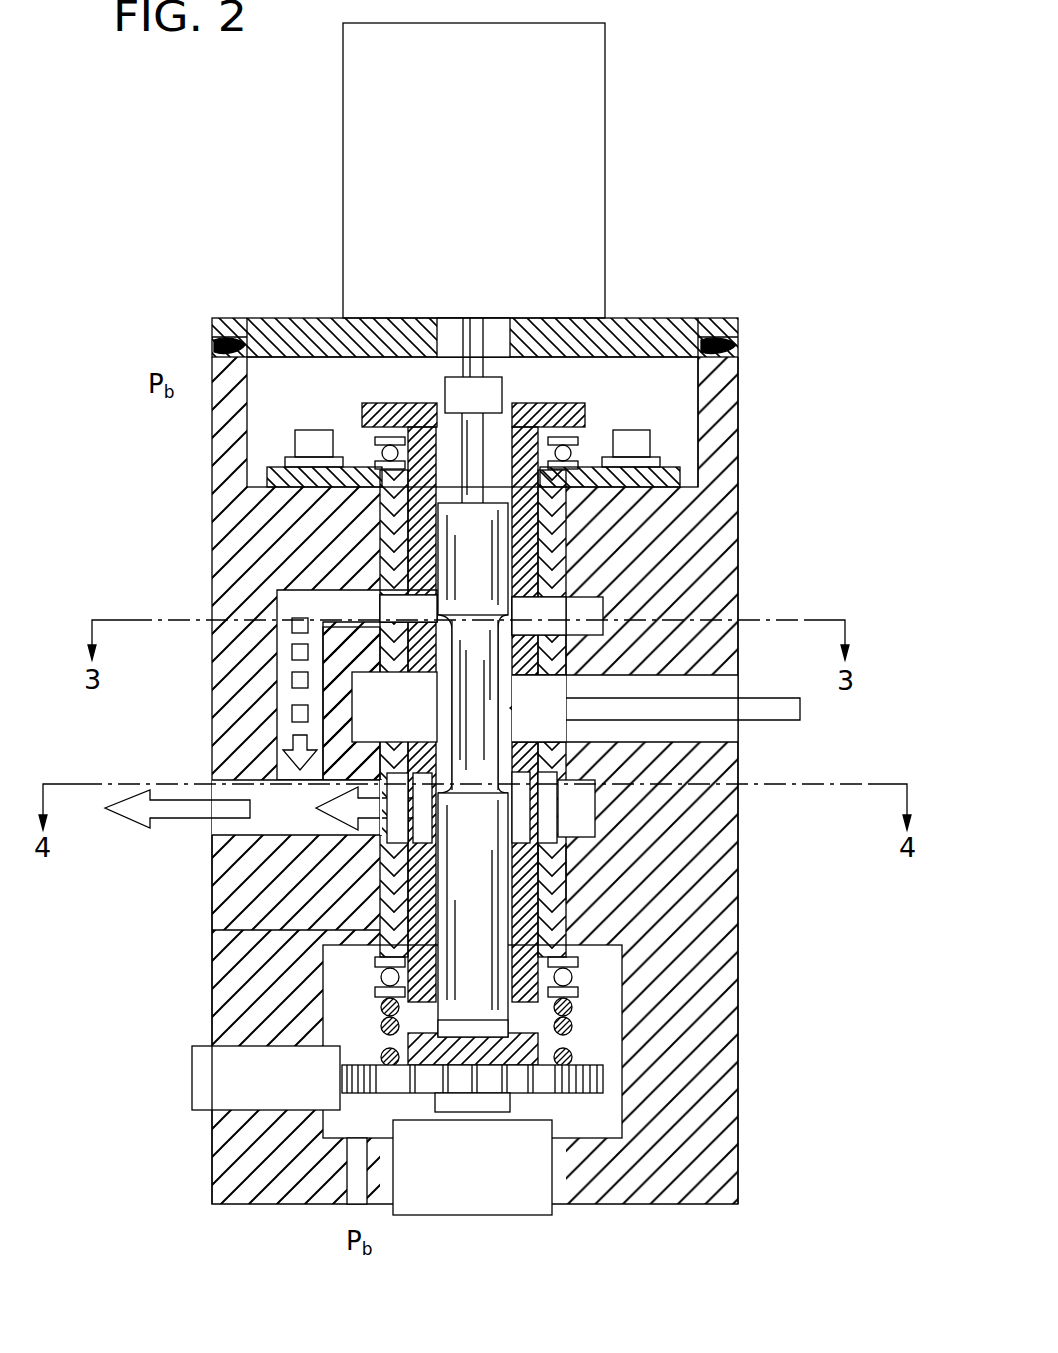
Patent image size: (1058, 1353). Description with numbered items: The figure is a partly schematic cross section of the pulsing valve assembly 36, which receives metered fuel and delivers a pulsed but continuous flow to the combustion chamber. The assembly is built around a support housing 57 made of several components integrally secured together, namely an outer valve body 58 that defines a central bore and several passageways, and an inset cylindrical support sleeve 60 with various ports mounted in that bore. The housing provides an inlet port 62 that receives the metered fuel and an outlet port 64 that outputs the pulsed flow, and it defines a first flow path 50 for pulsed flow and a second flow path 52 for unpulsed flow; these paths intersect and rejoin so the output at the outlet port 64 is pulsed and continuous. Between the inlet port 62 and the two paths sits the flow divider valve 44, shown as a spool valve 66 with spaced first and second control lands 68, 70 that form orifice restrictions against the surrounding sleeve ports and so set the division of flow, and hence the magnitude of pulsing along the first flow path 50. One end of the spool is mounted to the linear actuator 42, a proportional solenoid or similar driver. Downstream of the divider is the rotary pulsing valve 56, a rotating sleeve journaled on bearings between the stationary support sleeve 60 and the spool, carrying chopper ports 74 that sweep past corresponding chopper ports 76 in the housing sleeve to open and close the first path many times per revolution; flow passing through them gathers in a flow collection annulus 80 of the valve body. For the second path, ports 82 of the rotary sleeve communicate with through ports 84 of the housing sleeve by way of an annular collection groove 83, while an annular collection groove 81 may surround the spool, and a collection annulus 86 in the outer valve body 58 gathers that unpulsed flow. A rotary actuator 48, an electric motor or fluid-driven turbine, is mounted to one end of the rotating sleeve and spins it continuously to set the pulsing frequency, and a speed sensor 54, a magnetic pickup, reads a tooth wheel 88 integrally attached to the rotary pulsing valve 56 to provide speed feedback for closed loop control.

The pulsing valve assembly 36 is at (160, 172).
The actuator 42 is at (597, 88).
The flow divider valve 44 is at (475, 503).
The rotary actuator 48 is at (438, 1203).
The first flow path 50 is at (247, 707).
The second flow path 52 is at (345, 822).
The speed sensor 54 is at (195, 1062).
The rotary pulsing valve 56 is at (410, 1064).
The support housing 57 is at (740, 480).
The outer valve body 58 is at (720, 527).
The support sleeve 60 is at (575, 500).
The inlet port 62 is at (705, 733).
The outlet port 64 is at (215, 832).
The spool valve 66 is at (460, 523).
The first control land 68 is at (462, 555).
The second control land 70 is at (470, 905).
The chopper ports 74 is at (545, 568).
The chopper ports 76 is at (590, 607).
The flow collection annulus 80 is at (590, 662).
The annular collection groove 81 is at (523, 800).
The ports 82 is at (565, 905).
The annular collection groove 83 is at (560, 812).
The through ports 84 is at (578, 880).
The collection annulus 86 is at (565, 853).
The tooth wheel 88 is at (603, 1082).